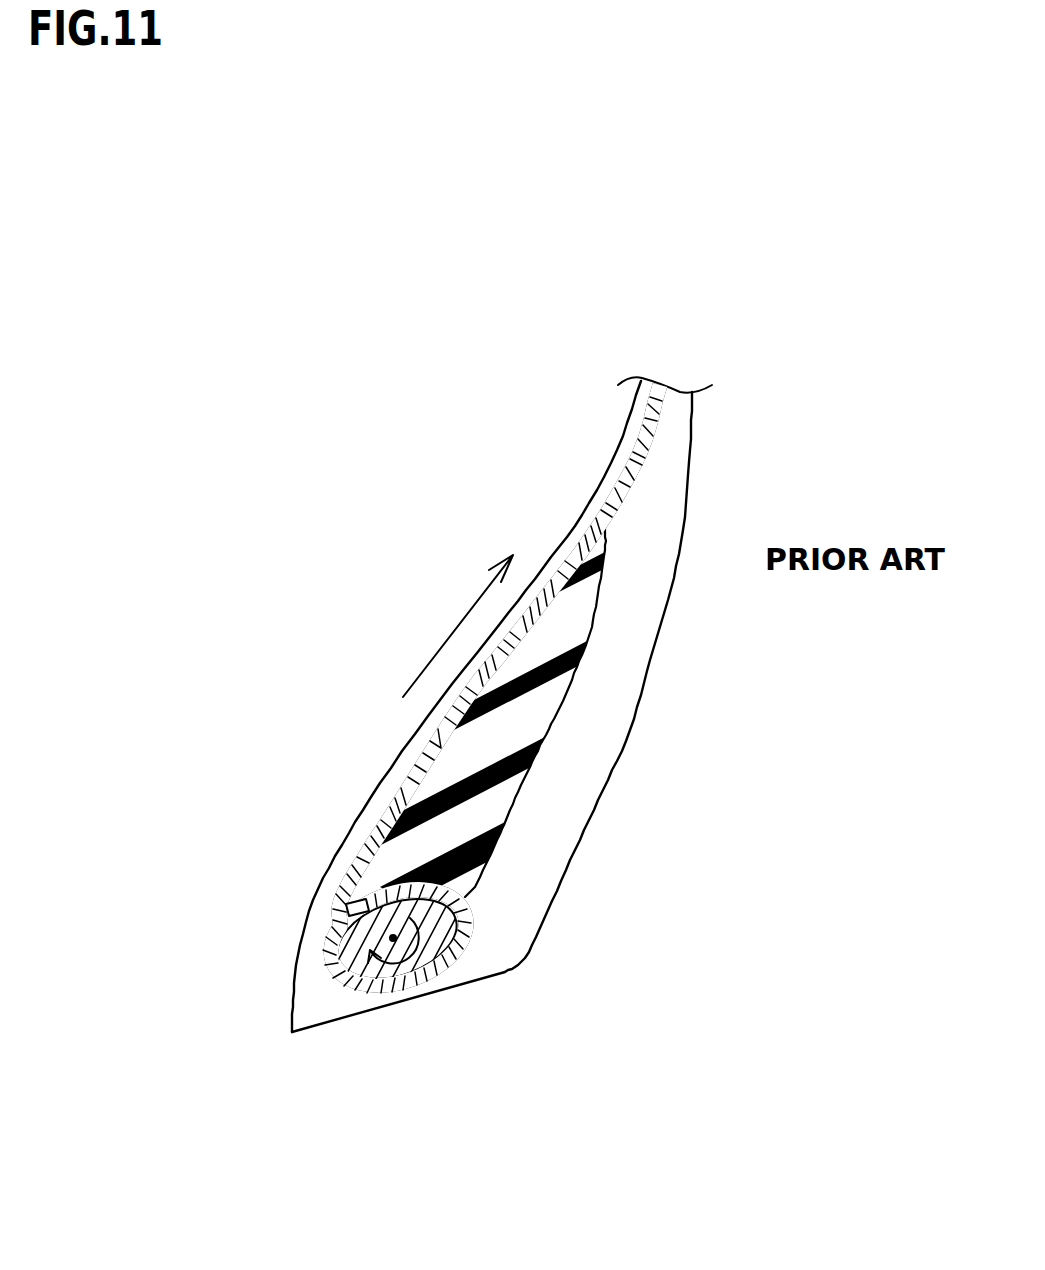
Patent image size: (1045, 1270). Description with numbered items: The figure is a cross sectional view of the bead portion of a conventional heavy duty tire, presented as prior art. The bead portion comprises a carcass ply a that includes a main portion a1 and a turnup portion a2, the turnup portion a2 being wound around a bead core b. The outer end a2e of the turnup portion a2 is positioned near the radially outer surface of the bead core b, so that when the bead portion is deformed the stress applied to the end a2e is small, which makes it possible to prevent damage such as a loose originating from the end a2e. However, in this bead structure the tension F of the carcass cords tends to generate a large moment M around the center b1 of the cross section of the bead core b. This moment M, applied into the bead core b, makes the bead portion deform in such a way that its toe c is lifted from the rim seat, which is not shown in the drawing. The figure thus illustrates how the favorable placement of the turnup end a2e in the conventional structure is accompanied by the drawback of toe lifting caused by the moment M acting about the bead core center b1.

The carcass ply a is at (305, 643).
The main portion a1 is at (418, 757).
The turnup portion a2 is at (365, 902).
The outer end of the turnup portion a2e is at (345, 908).
The bead core b is at (433, 930).
The center of the cross section of the bead core b1 is at (390, 937).
The moment M is at (405, 977).
The tension of the carcass cords F is at (458, 625).
The toe c is at (280, 1044).